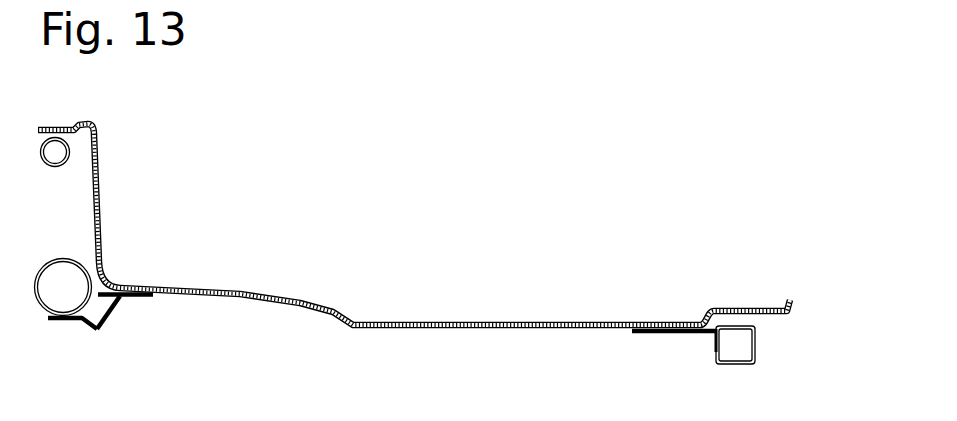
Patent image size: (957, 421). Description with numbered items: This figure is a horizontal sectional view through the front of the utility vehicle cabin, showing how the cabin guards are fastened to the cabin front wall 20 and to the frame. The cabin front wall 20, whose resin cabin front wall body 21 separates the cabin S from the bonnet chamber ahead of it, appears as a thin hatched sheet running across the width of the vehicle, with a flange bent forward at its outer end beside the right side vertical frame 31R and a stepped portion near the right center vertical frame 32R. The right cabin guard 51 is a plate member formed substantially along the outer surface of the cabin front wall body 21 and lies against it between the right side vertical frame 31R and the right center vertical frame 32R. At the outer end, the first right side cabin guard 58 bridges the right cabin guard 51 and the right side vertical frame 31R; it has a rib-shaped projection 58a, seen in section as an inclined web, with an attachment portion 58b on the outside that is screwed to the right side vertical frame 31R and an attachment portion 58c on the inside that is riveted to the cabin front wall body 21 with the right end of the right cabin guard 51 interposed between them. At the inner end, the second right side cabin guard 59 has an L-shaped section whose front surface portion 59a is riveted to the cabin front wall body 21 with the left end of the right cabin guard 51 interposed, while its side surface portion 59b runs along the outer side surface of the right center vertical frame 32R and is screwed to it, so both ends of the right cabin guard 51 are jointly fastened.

The cabin S is at (370, 193).
The cabin front wall 20 is at (414, 224).
The cabin front wall body 21 is at (190, 283).
The right cabin guard 51 is at (254, 298).
The right side vertical frame 31R is at (45, 257).
The first right side cabin guard 58 is at (135, 349).
The projection 58a is at (100, 330).
The attachment portion 58b is at (59, 326).
The attachment portion 58c is at (135, 303).
The second right side cabin guard 59 is at (636, 363).
The front surface portion 59a is at (670, 333).
The side surface portion 59b is at (712, 350).
The right center vertical frame 32R is at (736, 366).